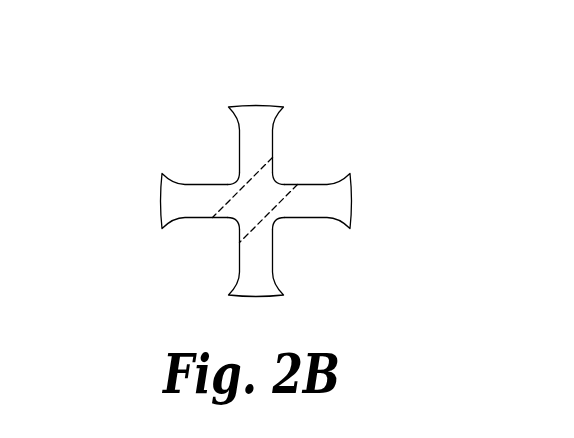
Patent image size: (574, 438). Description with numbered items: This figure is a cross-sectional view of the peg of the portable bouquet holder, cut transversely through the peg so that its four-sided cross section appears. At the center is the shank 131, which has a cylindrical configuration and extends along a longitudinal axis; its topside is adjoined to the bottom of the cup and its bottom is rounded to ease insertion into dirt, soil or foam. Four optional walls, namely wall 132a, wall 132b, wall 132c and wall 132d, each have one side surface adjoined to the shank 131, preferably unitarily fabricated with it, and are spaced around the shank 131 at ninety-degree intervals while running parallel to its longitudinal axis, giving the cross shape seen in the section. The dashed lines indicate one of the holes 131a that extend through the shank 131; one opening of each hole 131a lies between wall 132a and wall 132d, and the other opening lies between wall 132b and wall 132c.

The shank 131 is at (280, 180).
The holes 131a is at (240, 215).
The wall 132a is at (263, 288).
The wall 132b is at (348, 204).
The wall 132c is at (262, 112).
The wall 132d is at (162, 202).